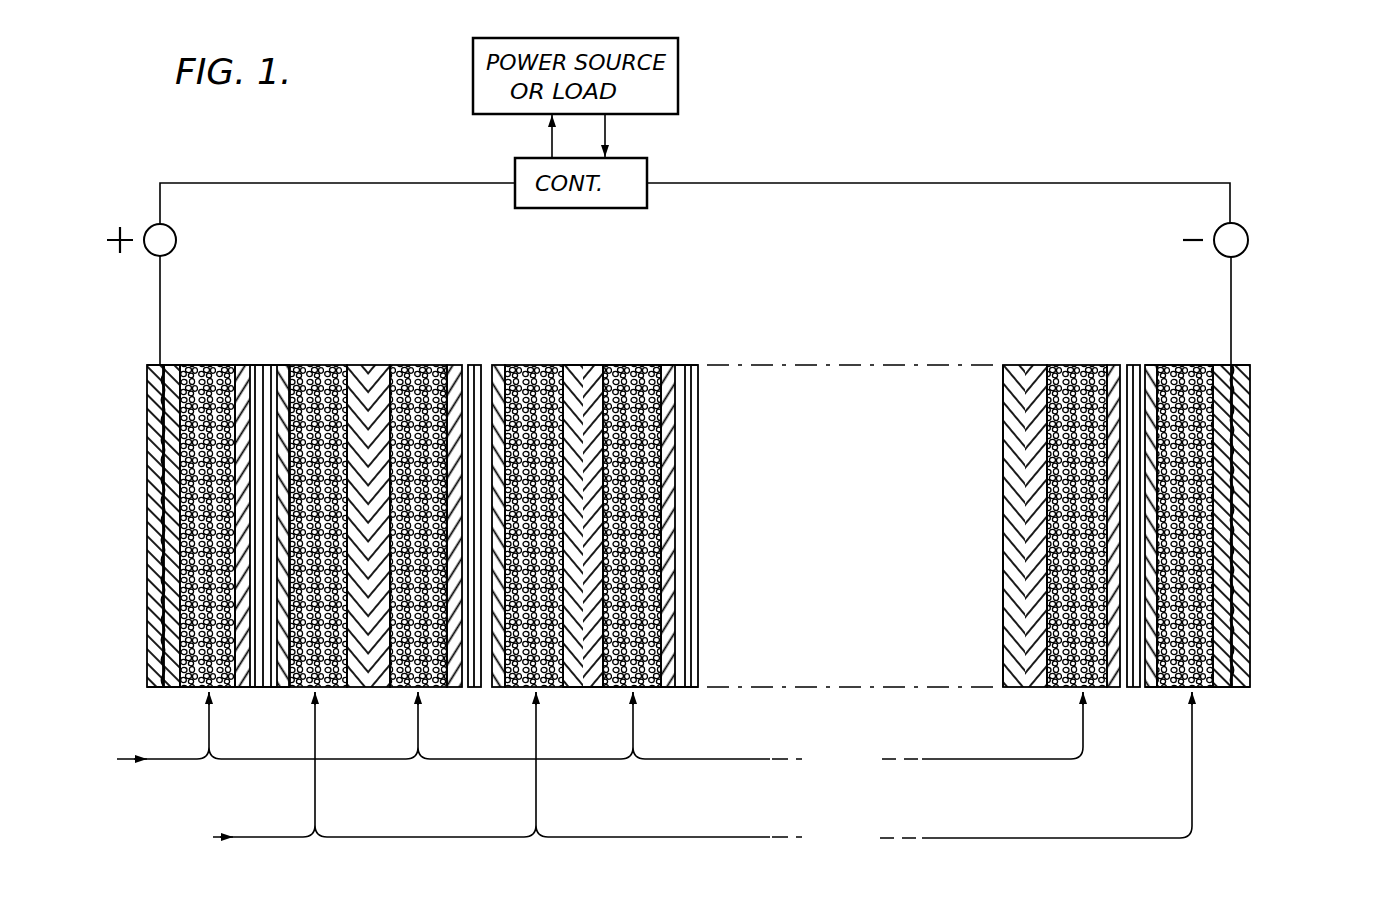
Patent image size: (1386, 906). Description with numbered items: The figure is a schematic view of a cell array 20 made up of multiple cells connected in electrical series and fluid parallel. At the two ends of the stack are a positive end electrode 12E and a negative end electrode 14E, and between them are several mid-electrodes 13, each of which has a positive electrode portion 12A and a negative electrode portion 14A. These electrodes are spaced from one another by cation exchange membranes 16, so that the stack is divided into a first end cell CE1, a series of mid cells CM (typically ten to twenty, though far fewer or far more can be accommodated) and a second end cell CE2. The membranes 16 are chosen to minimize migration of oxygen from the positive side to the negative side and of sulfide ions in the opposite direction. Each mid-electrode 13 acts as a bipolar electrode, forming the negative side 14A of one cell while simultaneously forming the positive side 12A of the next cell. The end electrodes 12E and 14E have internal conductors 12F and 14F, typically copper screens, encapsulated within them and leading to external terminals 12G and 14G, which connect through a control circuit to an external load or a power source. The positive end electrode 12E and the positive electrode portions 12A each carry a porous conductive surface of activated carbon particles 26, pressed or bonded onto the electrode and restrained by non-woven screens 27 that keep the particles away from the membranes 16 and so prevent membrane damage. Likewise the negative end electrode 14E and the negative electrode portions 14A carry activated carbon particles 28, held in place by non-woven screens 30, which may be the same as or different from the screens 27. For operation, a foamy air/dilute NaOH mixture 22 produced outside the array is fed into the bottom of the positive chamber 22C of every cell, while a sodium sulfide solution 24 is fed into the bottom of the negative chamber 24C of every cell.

The external terminal 12G is at (177, 240).
The external terminal 14G is at (1246, 232).
The end electrode 12E is at (152, 460).
The internal conductor 12F is at (160, 412).
The end electrode 14E is at (1250, 485).
The internal conductor 14F is at (1250, 427).
The activated carbon particles 26 is at (198, 363).
The non-woven screens 27 is at (242, 363).
The cation exchange membranes 16 is at (262, 363).
The non-woven screens 30 is at (283, 363).
The activated carbon particles 28 is at (310, 363).
The mid-electrode 13 is at (367, 352).
The negative electrode portion 14A is at (358, 365).
The positive electrode portion 12A is at (388, 365).
The cell array 20 is at (720, 472).
The air/dilute NaOH mixture 22 is at (572, 760).
The positive chamber 22C is at (188, 691).
The Na2S solution 24 is at (685, 859).
The negative chamber 24C is at (300, 692).
The end cell CE1 is at (193, 515).
The mid cell CM is at (647, 547).
The end cell CE2 is at (1195, 530).